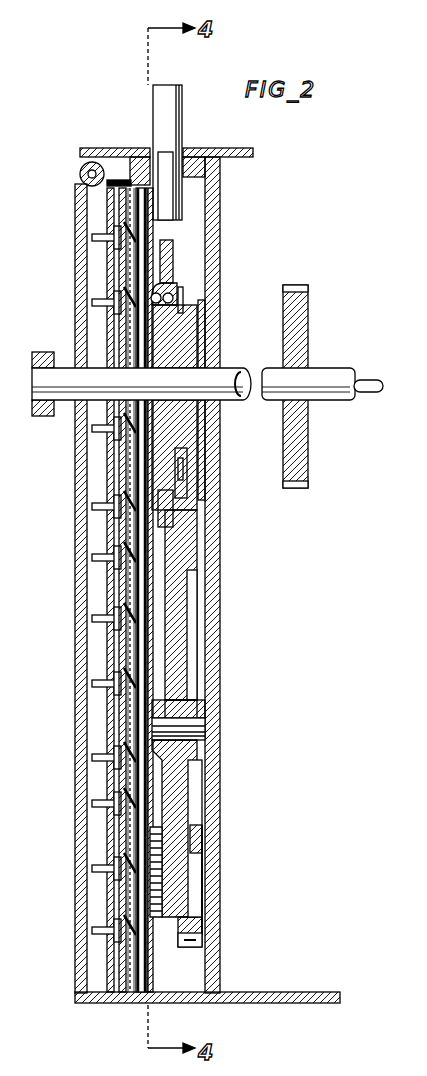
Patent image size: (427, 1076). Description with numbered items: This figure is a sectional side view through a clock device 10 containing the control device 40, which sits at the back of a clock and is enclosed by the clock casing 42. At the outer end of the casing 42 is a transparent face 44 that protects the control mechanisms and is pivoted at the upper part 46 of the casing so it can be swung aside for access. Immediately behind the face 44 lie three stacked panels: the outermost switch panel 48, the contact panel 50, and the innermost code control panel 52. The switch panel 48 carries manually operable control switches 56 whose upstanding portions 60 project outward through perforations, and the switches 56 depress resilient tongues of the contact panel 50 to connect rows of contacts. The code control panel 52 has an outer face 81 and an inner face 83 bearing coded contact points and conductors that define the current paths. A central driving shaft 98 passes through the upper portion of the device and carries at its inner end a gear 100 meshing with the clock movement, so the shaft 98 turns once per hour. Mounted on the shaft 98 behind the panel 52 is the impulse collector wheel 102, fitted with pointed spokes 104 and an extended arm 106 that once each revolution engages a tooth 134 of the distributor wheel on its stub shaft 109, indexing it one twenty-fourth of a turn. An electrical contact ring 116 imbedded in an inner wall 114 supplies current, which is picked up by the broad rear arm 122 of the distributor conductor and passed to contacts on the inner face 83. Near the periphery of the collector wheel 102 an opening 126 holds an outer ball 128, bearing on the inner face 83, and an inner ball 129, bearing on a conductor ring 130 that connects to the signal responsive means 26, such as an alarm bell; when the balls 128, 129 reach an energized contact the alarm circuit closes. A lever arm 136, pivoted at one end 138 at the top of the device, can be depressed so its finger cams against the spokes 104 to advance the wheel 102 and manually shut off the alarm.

The valve body 10 is at (200, 770).
The signal responsive means 26 is at (212, 325).
The control device 40 is at (228, 250).
The clock casing 42 is at (192, 1003).
The transparent face 44 is at (78, 486).
The upper part of the casing 46 is at (88, 175).
The switch panel 48 is at (108, 845).
The contact panel 50 is at (108, 654).
The code control panel 52 is at (147, 336).
The control switch 56 is at (118, 922).
The upstanding portion 60 is at (100, 936).
The outer face of code control panel 81 is at (146, 641).
The inner face of code control panel 83 is at (160, 700).
The central driving shaft 98 is at (70, 388).
The gear 100 is at (305, 315).
The collector wheel 102 is at (195, 345).
The pointed spoke 104 is at (166, 254).
The extended arm 106 is at (200, 487).
The stub shaft 109 is at (200, 735).
The inner wall 114 is at (218, 718).
The electrical contact ring 116 is at (197, 825).
The rear arm 122 is at (198, 845).
The opening 126 is at (163, 298).
The outer ball 128 is at (142, 296).
The inner ball 129 is at (183, 300).
The conductor ring 130 is at (184, 306).
The tooth 134 is at (196, 938).
The lever arm 136 is at (165, 134).
The pivoted end 138 is at (190, 215).